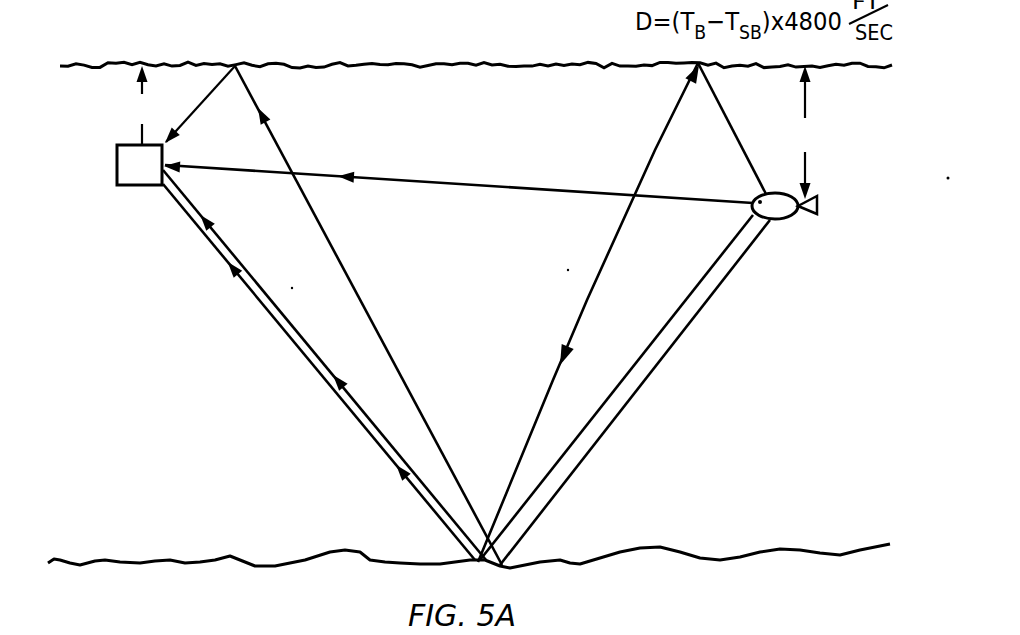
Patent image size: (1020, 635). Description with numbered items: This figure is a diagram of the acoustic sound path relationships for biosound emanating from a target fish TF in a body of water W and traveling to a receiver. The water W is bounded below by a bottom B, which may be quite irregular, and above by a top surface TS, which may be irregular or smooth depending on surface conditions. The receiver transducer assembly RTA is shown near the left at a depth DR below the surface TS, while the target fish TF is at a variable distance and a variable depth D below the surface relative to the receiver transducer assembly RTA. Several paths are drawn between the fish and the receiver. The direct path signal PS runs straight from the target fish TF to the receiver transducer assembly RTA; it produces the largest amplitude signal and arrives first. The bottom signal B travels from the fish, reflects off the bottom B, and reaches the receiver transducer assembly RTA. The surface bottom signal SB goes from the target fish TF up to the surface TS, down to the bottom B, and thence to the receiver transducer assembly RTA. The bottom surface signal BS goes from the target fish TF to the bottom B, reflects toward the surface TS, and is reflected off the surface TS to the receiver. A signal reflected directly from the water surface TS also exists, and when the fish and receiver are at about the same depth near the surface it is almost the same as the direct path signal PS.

The top surface TS is at (508, 51).
The bottom B is at (156, 556).
The bottom surface signal BS is at (337, 252).
The surface bottom signal SB is at (337, 392).
The direct path signal PS is at (516, 183).
The receiver transducer assembly RTA is at (135, 190).
The depth of RTA DR is at (144, 105).
The depth D is at (805, 132).
The target fish TF is at (797, 220).
The body of water W is at (484, 331).